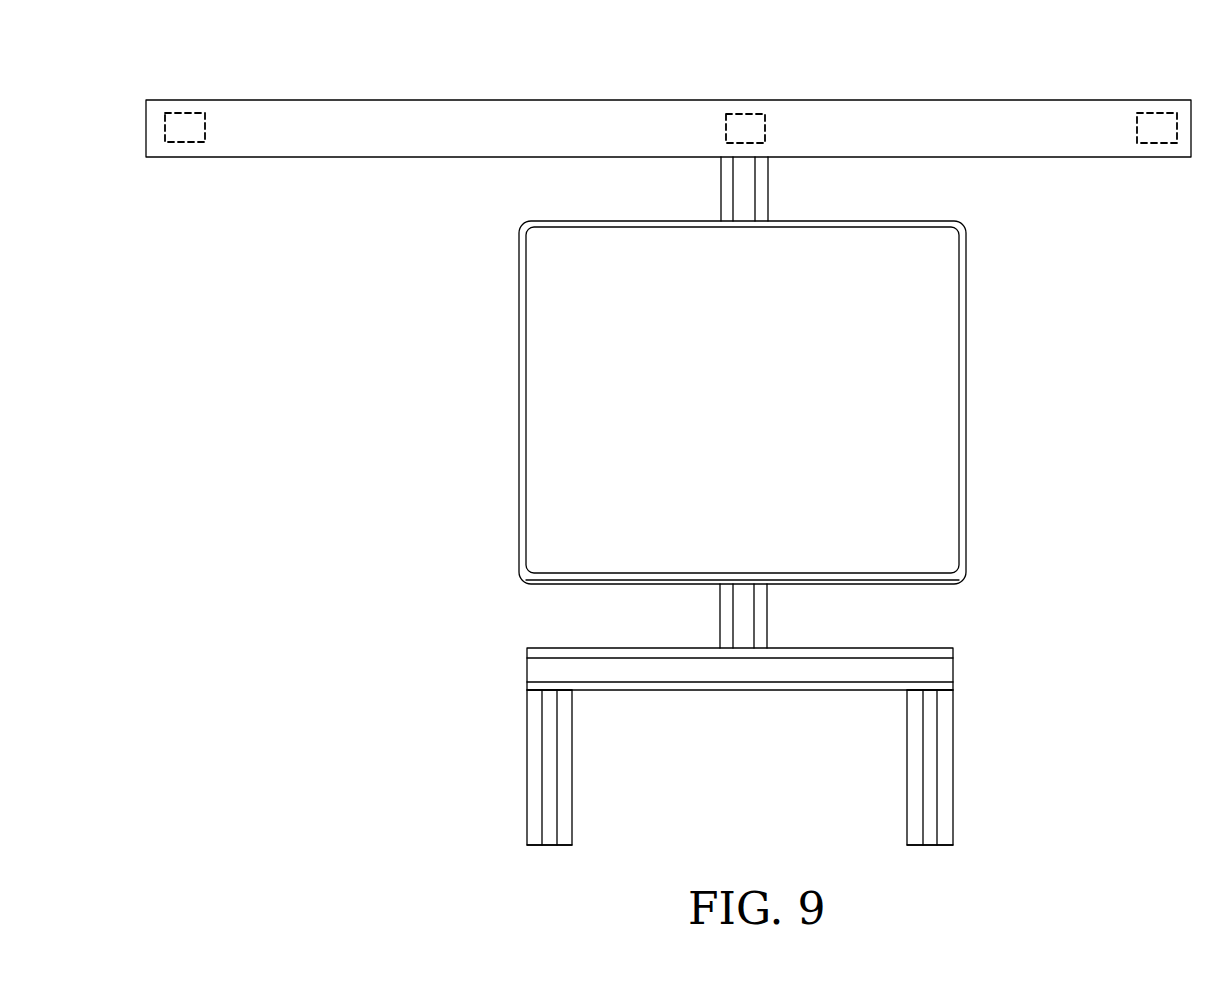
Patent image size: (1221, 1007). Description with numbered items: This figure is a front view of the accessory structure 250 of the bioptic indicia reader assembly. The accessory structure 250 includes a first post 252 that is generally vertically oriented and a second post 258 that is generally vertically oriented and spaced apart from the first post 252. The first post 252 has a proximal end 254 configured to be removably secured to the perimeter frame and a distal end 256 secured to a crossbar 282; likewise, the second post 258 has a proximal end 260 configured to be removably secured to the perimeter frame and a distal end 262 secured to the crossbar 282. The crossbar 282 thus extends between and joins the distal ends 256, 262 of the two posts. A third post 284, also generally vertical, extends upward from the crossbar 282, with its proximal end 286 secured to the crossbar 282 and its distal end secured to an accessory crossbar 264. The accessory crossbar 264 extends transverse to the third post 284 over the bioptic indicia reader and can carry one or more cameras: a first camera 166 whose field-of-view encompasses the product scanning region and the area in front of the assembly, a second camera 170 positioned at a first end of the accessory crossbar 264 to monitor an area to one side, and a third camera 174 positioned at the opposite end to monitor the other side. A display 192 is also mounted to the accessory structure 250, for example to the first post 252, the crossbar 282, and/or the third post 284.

The accessory structure 250 is at (296, 268).
The accessory crossbar 264 is at (1027, 137).
The second camera 170 is at (205, 128).
The first camera 166 is at (727, 130).
The third camera 174 is at (1137, 128).
The third post 284 is at (742, 194).
The display 192 is at (968, 403).
The crossbar 282 is at (720, 665).
The proximal end of third post 286 is at (711, 638).
The first post 252 is at (545, 770).
The distal end of first post 256 is at (512, 694).
The proximal end of first post 254 is at (512, 842).
The second post 258 is at (925, 762).
The distal end of second post 262 is at (965, 692).
The proximal end of second post 260 is at (965, 843).